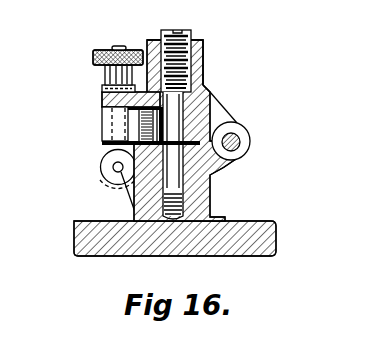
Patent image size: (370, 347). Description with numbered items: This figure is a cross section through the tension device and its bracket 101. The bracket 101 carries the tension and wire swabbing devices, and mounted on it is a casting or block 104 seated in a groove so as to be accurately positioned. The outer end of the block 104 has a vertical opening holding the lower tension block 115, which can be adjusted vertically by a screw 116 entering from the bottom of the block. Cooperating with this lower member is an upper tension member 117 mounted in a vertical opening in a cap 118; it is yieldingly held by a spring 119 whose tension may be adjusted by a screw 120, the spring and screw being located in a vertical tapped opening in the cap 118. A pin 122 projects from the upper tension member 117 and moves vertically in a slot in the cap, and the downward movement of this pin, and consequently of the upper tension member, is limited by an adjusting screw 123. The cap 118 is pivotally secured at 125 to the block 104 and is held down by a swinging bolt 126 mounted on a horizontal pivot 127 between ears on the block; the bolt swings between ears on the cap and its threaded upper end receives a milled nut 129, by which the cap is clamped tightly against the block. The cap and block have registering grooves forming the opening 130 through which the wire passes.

The bracket 101 is at (237, 220).
The casting or block 104 is at (218, 173).
The lower tension block 115 is at (175, 171).
The screw 116 is at (164, 204).
The upper tension member 117 is at (211, 93).
The cap 118 is at (215, 113).
The spring 119 is at (203, 68).
The screw 120 is at (190, 30).
The pin 122 is at (128, 108).
The adjusting screw 123 is at (136, 127).
The pivot 125 is at (248, 141).
The swinging bolt 126 is at (110, 145).
The horizontal pivot 127 is at (112, 170).
The milled nut 129 is at (106, 52).
The opening 130 is at (244, 128).